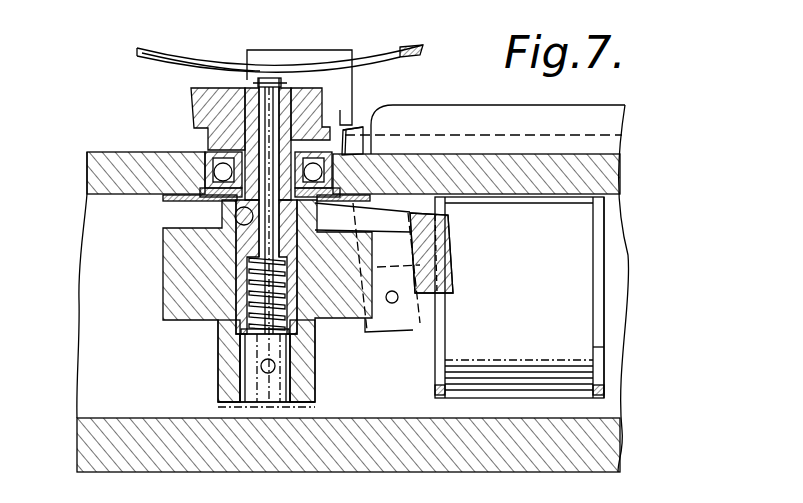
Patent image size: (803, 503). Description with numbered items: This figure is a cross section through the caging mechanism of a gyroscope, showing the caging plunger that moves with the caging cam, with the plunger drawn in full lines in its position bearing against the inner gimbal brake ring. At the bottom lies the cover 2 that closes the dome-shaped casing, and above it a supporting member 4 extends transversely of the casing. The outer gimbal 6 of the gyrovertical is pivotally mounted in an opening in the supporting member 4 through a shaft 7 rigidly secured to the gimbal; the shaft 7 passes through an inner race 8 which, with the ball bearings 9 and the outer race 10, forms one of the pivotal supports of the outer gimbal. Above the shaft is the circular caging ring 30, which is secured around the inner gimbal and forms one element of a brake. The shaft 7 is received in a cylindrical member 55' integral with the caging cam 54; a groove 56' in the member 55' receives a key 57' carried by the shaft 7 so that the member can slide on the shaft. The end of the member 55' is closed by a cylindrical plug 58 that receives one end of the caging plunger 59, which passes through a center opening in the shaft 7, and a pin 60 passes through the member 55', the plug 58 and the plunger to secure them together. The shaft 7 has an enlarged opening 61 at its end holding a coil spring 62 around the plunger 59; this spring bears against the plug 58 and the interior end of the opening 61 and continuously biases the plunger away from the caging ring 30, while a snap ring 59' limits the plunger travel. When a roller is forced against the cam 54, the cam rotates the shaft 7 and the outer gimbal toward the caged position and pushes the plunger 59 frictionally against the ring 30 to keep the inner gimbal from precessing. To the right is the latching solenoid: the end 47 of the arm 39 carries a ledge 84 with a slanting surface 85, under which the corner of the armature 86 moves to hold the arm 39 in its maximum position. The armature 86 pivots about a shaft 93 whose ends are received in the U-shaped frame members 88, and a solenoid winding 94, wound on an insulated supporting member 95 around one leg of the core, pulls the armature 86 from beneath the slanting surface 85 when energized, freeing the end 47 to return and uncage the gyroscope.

The cover 2 is at (608, 448).
The supporting member 4 is at (131, 154).
The outer gimbal 6 is at (191, 105).
The shaft 7 is at (340, 113).
The inner race 8 is at (214, 158).
The ball bearings 9 is at (324, 171).
The outer race 10 is at (212, 189).
The caging ring 30 is at (384, 47).
The arm 39 is at (453, 254).
The end of arm 47 is at (297, 50).
The caging cam 54 is at (455, 281).
The cylindrical member 55' is at (330, 361).
The groove 56' is at (207, 361).
The key 57' is at (218, 216).
The cylindrical plug 58 is at (250, 386).
The caging plunger 59 is at (240, 240).
The snap ring 59' is at (322, 76).
The pin 60 is at (275, 366).
The enlarged opening 61 is at (287, 303).
The coil spring 62 is at (290, 286).
The ledge 84 is at (371, 114).
The slanting surface 85 is at (352, 129).
The armature 86 is at (351, 143).
The U-shaped frame members 88 is at (398, 330).
The shaft 93 is at (391, 303).
The solenoid winding 94 is at (519, 297).
The insulated supporting member 95 is at (598, 291).